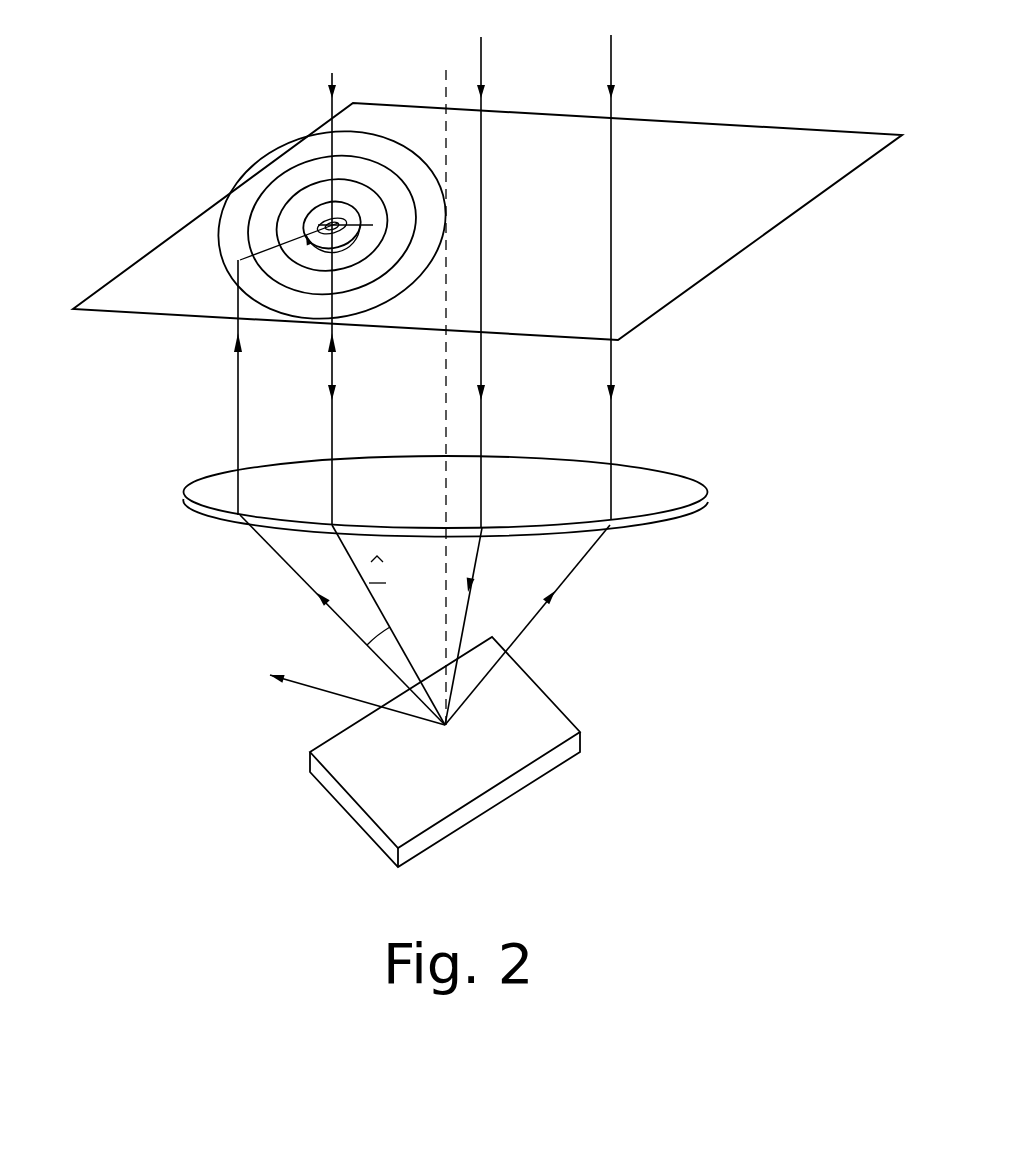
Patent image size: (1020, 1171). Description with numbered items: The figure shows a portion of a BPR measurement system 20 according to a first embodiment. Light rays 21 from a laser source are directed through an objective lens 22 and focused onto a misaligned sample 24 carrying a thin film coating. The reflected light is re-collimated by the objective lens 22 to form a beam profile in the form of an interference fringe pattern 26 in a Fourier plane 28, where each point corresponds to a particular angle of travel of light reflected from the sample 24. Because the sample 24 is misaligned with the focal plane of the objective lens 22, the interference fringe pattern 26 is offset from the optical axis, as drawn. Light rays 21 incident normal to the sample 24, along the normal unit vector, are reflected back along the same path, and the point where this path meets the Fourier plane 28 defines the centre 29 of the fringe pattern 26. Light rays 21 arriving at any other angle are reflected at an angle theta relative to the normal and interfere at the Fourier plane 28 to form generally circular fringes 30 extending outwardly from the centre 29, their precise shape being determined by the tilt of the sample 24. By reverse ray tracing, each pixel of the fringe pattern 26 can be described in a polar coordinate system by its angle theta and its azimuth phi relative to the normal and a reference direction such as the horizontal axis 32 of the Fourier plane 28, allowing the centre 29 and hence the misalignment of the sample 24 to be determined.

The BPR measurement system 20 is at (120, 149).
The light rays 21 is at (611, 66).
The objective lens 22 is at (687, 493).
The misaligned sample 24 is at (430, 691).
The interference fringe pattern 26 is at (270, 163).
The Fourier plane 28 is at (772, 198).
The centre of the fringe pattern 29 is at (327, 228).
The fringes 30 is at (378, 157).
The horizontal axis 32 is at (353, 230).